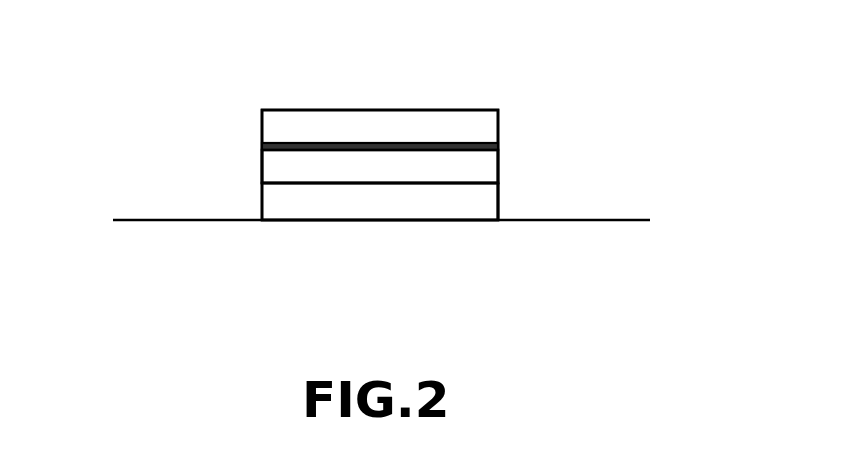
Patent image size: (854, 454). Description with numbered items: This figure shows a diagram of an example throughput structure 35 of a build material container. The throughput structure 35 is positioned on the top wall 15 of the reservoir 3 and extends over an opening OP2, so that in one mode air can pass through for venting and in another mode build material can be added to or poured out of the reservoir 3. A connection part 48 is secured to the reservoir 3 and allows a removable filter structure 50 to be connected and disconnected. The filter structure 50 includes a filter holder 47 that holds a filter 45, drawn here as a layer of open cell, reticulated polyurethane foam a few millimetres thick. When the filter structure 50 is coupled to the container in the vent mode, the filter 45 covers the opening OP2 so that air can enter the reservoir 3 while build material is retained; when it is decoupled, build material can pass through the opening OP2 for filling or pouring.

The top wall 15 is at (197, 219).
The reservoir 3 is at (398, 333).
The connection part 48 is at (312, 209).
The throughput structure 35 is at (500, 200).
The removable filter structure 50 is at (263, 158).
The filter 45 is at (421, 142).
The filter holder 47 is at (476, 168).
The throughput opening OP2 is at (423, 223).